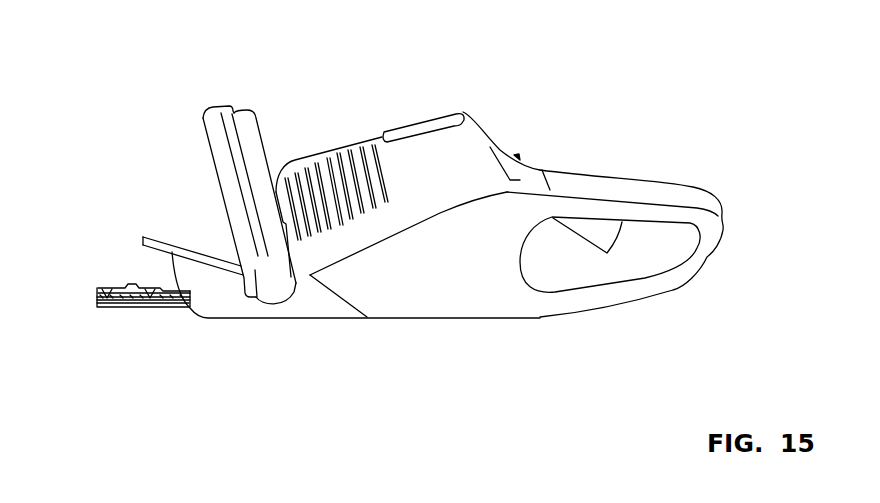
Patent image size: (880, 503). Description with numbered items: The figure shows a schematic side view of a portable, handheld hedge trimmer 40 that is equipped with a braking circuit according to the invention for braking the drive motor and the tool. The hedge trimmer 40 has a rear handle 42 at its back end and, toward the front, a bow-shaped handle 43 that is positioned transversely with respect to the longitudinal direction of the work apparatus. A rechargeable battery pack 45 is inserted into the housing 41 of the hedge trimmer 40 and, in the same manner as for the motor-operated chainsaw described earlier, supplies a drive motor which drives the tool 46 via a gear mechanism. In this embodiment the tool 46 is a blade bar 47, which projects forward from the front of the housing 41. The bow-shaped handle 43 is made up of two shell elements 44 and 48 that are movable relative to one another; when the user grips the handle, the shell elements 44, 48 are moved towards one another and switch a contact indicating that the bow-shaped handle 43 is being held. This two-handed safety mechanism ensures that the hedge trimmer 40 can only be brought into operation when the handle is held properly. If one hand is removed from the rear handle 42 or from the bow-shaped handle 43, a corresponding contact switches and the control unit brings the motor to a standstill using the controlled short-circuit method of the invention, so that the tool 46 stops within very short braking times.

The hedge trimmer 40 is at (565, 132).
The housing 41 is at (477, 140).
The rear handle 42 is at (670, 192).
The front bow-shaped handle 43 is at (213, 111).
The shell element 44 is at (253, 143).
The rechargeable battery pack 45 is at (413, 128).
The tool 46 is at (108, 278).
The blade bar 47 is at (100, 300).
The shell element 48 is at (220, 151).